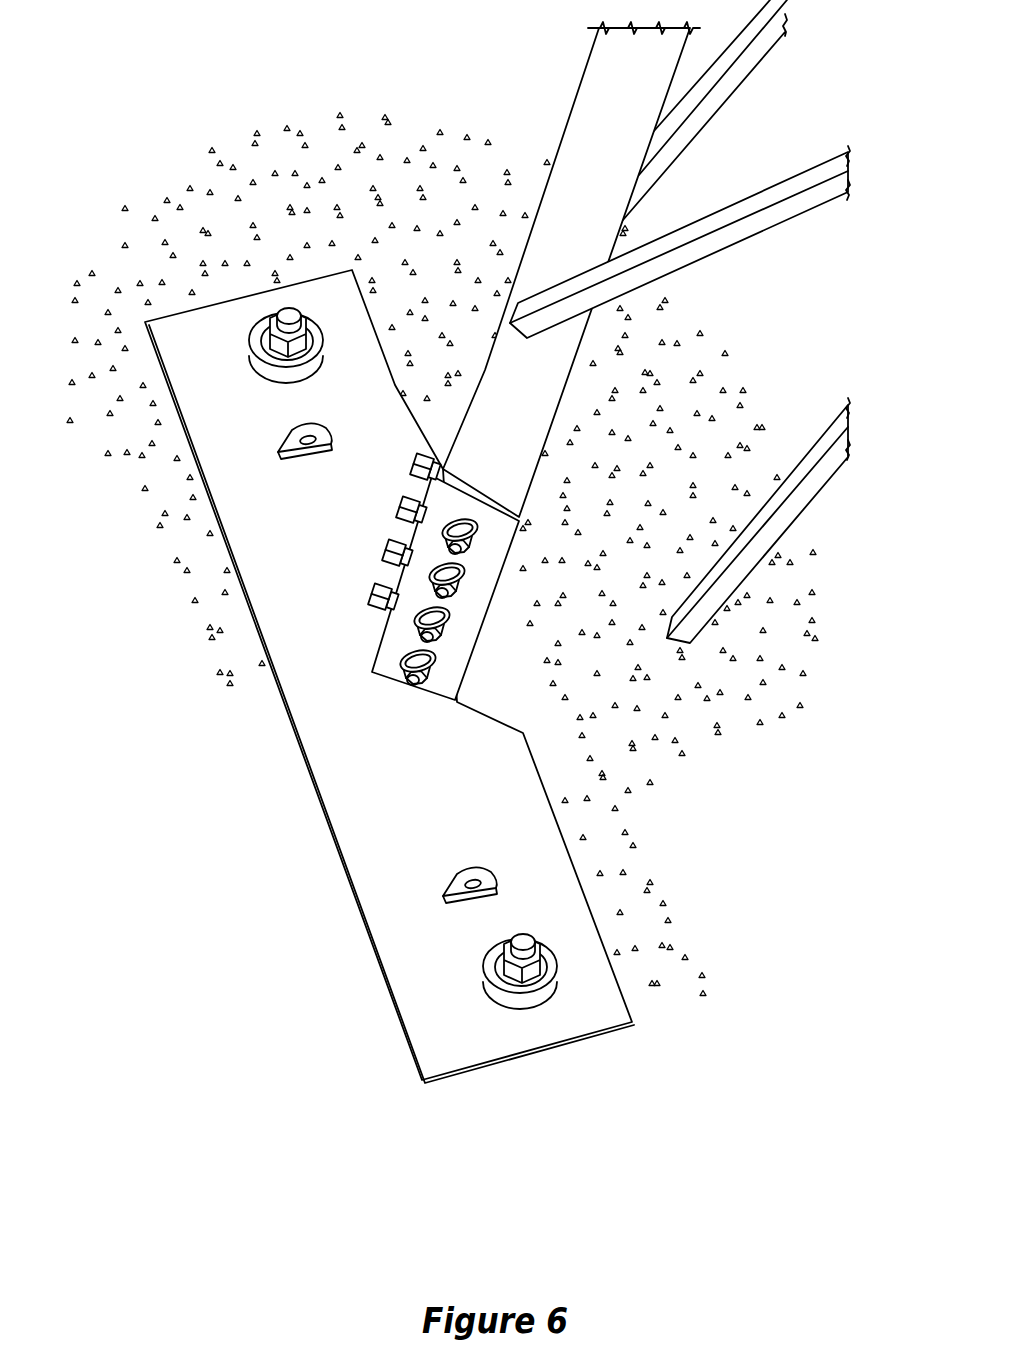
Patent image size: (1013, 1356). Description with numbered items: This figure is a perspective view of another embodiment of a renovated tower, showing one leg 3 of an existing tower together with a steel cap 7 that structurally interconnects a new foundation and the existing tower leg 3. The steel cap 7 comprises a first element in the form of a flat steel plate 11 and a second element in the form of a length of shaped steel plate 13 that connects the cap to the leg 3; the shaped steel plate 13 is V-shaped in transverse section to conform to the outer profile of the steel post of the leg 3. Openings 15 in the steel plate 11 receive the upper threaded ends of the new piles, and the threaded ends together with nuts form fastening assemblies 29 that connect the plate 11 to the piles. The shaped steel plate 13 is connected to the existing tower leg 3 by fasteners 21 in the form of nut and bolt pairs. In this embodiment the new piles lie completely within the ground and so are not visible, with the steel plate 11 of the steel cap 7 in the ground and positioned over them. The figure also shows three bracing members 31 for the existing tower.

The existing tower leg 3 is at (514, 456).
The steel cap 7 is at (137, 233).
The flat steel plate 11 is at (419, 803).
The shaped steel plate 13 is at (390, 660).
The openings 15 is at (259, 368).
The fasteners 21 is at (413, 622).
The fastening assemblies 29 is at (273, 325).
The bracing members 31 is at (825, 472).